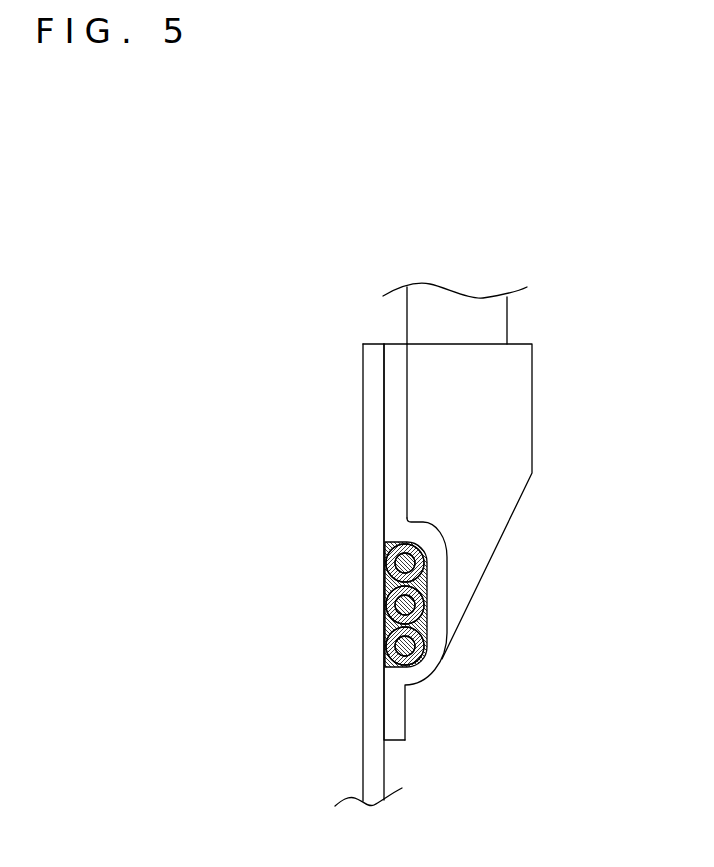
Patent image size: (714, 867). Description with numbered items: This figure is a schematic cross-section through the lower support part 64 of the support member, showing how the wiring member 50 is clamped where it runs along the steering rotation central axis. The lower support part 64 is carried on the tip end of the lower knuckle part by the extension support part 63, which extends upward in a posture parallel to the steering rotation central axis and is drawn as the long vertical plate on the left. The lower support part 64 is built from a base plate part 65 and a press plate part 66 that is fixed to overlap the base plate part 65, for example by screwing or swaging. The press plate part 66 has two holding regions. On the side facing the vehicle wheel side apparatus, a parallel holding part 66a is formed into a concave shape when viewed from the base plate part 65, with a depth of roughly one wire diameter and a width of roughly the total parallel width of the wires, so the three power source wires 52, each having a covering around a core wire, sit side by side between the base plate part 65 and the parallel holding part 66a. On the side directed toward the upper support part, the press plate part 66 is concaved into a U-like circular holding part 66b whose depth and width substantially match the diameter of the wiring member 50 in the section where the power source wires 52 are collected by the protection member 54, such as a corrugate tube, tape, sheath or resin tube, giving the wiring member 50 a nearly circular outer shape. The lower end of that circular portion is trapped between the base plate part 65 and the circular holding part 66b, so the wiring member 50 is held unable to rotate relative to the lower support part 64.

The wiring member 50 is at (507, 325).
The power source wire 52 is at (390, 627).
The protection member 54 is at (464, 303).
The extension support part 63 is at (362, 768).
The lower support part 64 is at (386, 513).
The base plate part 65 is at (372, 342).
The press plate part 66 is at (408, 513).
The parallel holding part 66a is at (447, 590).
The circular holding part 66b is at (533, 412).